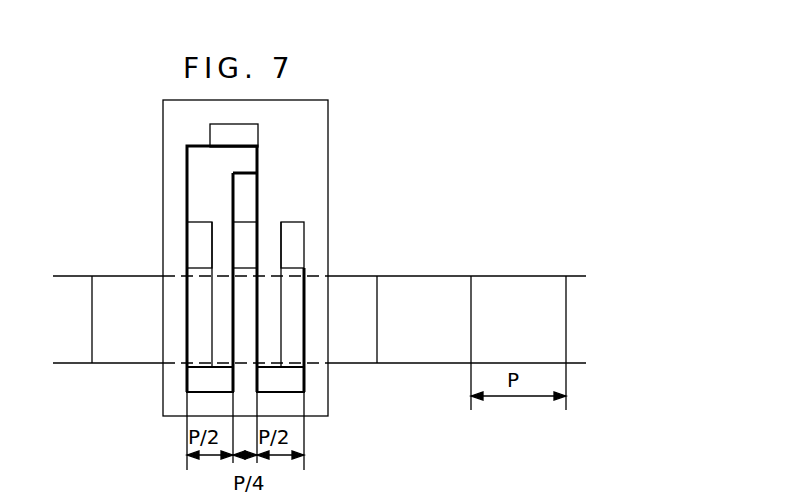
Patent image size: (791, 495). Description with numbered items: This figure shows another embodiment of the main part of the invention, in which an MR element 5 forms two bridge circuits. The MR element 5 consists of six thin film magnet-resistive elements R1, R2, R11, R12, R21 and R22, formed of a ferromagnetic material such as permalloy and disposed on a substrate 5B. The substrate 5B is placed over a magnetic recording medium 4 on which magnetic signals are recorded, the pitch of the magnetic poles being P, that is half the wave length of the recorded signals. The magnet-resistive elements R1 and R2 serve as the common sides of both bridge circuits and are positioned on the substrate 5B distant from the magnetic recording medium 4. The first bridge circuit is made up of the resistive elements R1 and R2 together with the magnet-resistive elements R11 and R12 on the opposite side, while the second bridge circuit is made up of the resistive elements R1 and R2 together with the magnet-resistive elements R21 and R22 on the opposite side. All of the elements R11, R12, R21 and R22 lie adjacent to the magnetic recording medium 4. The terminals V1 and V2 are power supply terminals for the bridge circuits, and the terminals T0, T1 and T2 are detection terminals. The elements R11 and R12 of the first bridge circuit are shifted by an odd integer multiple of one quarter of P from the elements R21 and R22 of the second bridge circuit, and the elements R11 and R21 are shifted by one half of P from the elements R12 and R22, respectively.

The magnetic recording medium 4 is at (73, 290).
The MR element 5 is at (322, 121).
The substrate 5B is at (168, 183).
The detection terminal T0 is at (210, 130).
The magnet-resistive element R1 is at (230, 188).
The magnet-resistive element R2 is at (190, 185).
The power supply terminal V1 is at (248, 228).
The power supply terminal V2 is at (290, 228).
The magnet-resistive element R12 is at (232, 300).
The magnet-resistive element R11 is at (188, 314).
The magnet-resistive element R22 is at (303, 312).
The magnet-resistive element R21 is at (258, 325).
The detection terminal T1 is at (195, 377).
The detection terminal T2 is at (297, 377).